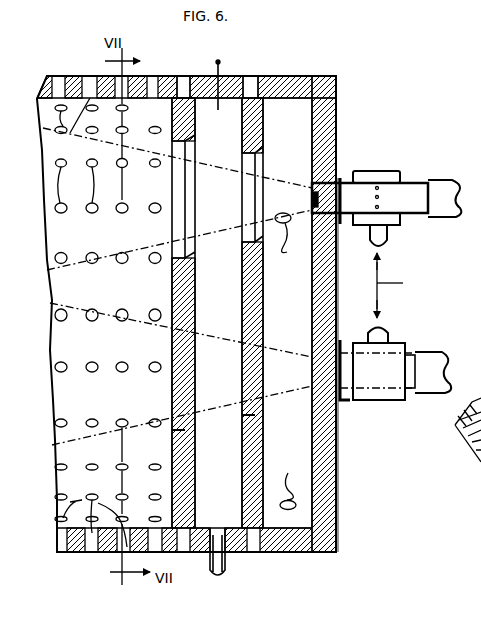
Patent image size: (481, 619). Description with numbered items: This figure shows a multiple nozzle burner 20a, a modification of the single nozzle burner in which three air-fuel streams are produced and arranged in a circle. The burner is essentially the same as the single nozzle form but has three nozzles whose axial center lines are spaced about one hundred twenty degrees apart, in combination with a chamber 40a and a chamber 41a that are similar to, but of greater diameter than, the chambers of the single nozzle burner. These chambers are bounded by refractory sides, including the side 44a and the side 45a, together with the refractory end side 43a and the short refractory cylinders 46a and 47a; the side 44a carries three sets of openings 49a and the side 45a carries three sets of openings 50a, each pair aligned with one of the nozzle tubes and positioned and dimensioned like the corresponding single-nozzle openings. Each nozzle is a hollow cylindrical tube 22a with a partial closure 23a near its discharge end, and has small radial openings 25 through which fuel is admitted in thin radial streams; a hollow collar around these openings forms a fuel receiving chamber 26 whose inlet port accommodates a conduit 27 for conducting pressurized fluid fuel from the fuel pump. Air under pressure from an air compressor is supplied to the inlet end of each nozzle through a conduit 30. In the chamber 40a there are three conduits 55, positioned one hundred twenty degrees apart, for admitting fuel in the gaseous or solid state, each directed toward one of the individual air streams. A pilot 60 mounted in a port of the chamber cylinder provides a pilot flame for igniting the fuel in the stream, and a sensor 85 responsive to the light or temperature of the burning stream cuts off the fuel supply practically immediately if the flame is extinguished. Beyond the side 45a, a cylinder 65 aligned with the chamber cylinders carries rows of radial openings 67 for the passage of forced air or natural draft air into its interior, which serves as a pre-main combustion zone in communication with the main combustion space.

The multiple nozzle burner 20a is at (334, 72).
The cylinder 65 is at (73, 77).
The radial openings 67 is at (82, 162).
The side 45a is at (177, 129).
The chamber 41a is at (193, 77).
The bore 47a is at (202, 90).
The sensor 85 is at (222, 71).
The top wall portion 46a is at (291, 80).
The corner wall 43a is at (332, 91).
The chamber 40a is at (318, 130).
The openings 50a is at (192, 147).
The side 44a is at (263, 121).
The openings 49a is at (262, 159).
The valve seat 23a is at (313, 198).
The bracket 22a is at (347, 177).
The radial openings 25 is at (377, 171).
The fuel receiving chamber 26 is at (400, 173).
The conduit 27 is at (370, 243).
The conduit 30 is at (442, 352).
The conduit 55 is at (285, 361).
The pilot 60 is at (227, 563).